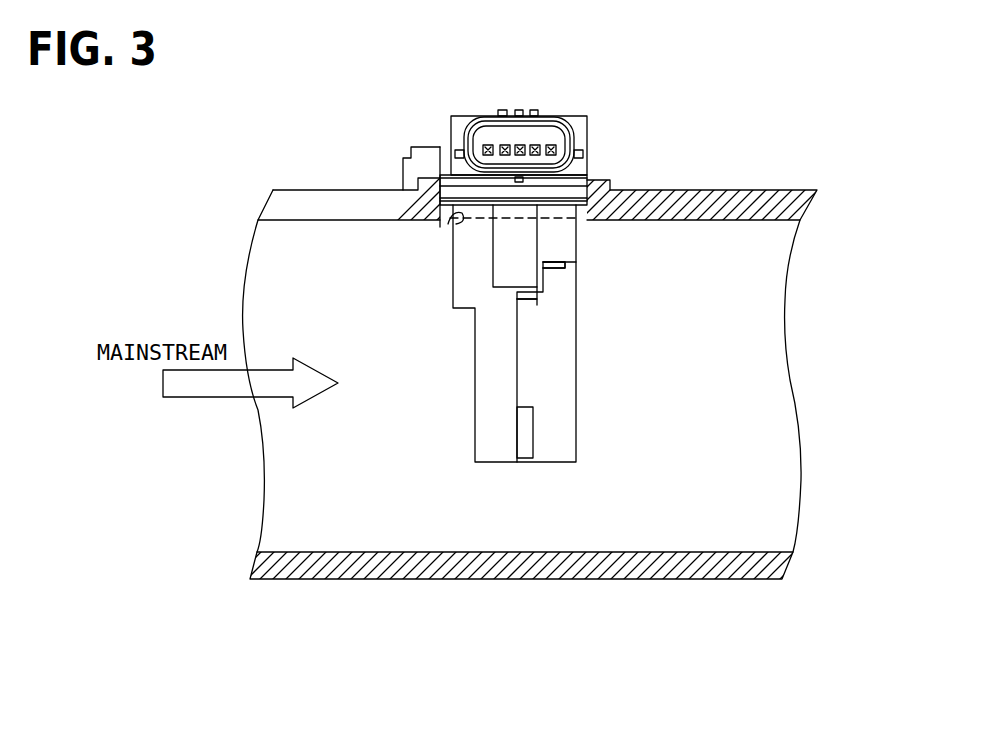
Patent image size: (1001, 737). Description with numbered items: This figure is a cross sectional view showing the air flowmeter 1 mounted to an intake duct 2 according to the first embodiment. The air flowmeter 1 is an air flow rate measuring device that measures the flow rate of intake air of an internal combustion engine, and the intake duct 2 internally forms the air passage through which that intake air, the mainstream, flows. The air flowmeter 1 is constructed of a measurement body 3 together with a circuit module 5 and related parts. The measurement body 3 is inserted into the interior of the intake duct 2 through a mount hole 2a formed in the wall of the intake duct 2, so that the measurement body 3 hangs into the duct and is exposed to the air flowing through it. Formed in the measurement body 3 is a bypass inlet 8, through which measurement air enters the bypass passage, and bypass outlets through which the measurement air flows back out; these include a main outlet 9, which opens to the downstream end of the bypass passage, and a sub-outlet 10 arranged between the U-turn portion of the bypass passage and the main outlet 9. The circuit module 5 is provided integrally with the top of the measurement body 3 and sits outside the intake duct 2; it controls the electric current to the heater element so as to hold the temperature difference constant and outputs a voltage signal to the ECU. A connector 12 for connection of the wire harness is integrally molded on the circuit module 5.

The air flowmeter 1 is at (627, 129).
The intake duct 2 is at (782, 197).
The mount hole 2a is at (448, 224).
The measurement body 3 is at (500, 447).
The circuit module 5 is at (463, 120).
The bypass inlet 8 is at (467, 402).
The main outlet 9 is at (528, 437).
The sub-outlet 10 is at (530, 299).
The connector 12 is at (563, 122).